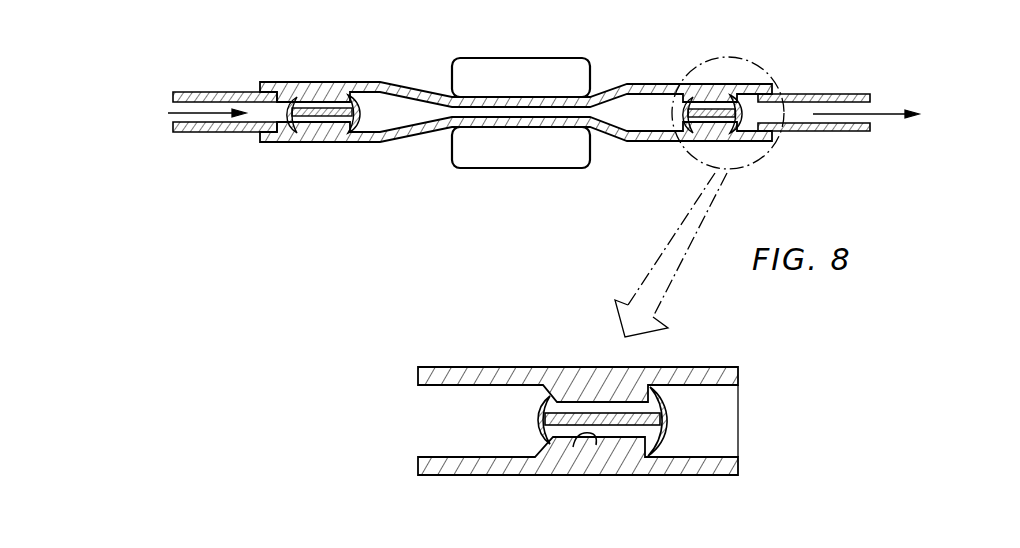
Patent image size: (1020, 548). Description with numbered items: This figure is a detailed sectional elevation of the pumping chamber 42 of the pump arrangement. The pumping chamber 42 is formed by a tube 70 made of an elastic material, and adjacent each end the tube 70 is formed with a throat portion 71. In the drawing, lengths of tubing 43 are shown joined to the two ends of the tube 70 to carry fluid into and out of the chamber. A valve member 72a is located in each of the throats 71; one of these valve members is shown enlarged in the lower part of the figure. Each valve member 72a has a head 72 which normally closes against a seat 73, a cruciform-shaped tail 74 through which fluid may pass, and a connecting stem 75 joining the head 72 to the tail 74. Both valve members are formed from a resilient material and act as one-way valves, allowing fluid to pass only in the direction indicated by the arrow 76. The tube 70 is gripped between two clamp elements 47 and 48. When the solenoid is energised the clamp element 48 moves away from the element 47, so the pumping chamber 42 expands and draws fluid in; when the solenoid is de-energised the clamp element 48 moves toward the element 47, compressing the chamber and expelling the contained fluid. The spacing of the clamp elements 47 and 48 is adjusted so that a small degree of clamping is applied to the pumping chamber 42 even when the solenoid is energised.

The pumping chamber 42 is at (342, 187).
The tubing 43 is at (207, 87).
The clamp element 47 is at (533, 57).
The clamp element 48 is at (533, 165).
The tube 70 is at (417, 377).
The throat portion 71 is at (322, 93).
The head 72 is at (347, 100).
The valve member 72a is at (367, 117).
The seat 73 is at (635, 442).
The cruciform-shaped tail 74 is at (283, 127).
The connecting stem 75 is at (592, 410).
The arrow 76 is at (890, 125).